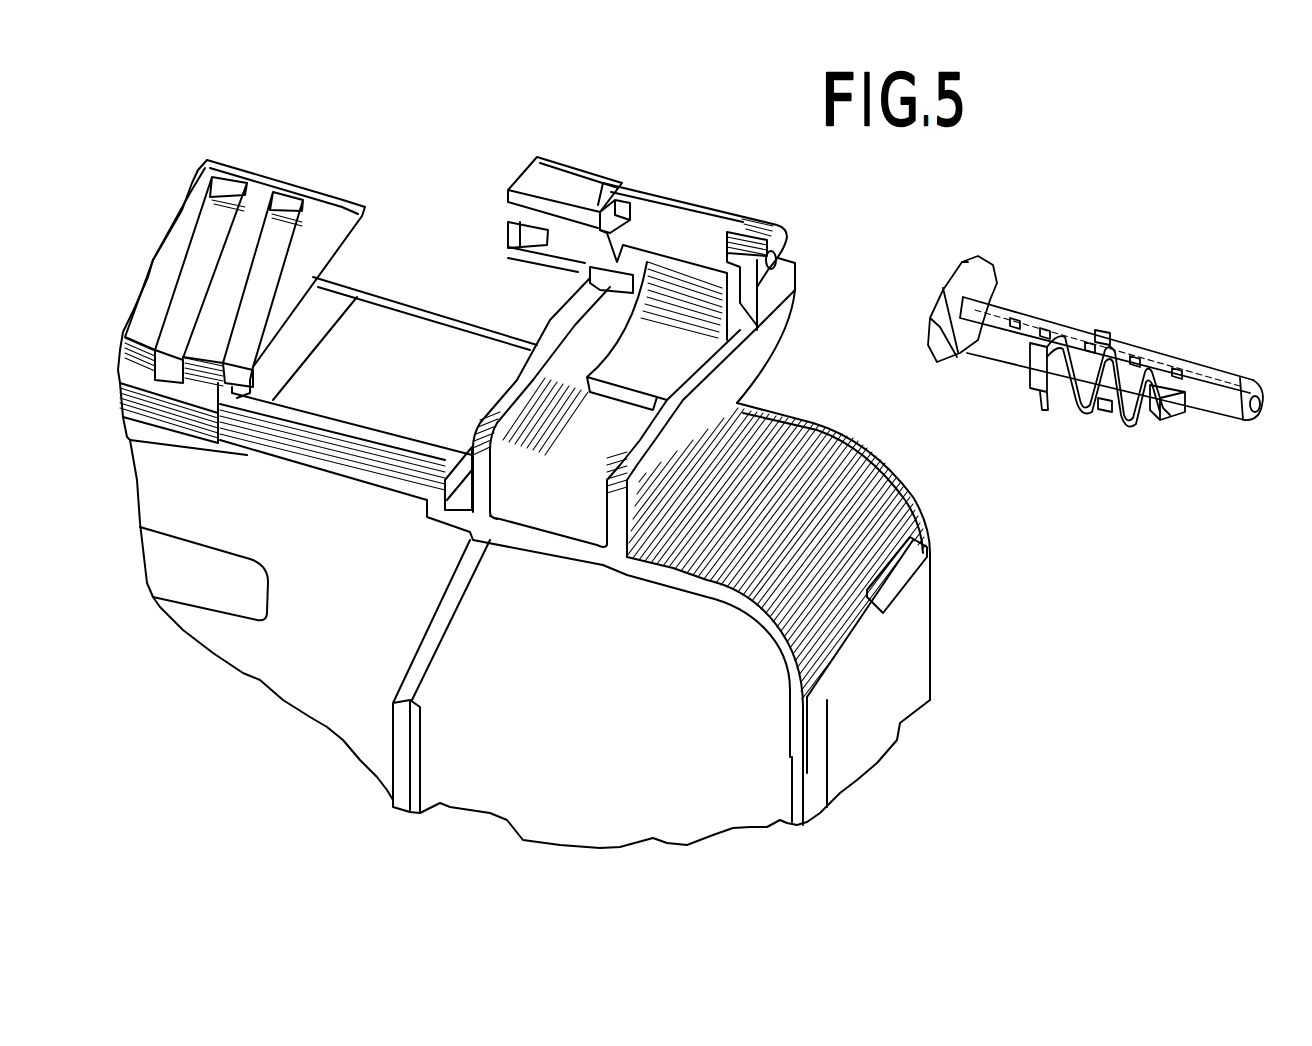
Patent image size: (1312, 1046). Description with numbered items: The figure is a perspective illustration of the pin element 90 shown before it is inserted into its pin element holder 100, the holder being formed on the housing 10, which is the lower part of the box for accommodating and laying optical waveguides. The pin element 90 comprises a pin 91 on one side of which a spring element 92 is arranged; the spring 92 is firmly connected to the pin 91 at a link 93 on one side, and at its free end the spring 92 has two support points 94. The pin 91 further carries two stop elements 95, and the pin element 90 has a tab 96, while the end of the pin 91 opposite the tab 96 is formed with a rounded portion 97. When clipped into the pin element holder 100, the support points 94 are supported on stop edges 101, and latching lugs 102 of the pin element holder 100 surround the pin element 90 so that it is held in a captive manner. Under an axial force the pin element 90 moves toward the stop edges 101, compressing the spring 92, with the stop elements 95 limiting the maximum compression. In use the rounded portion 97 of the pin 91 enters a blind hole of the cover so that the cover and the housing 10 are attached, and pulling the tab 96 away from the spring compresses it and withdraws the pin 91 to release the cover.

The housing 10 is at (907, 683).
The pin element holder 100 is at (759, 206).
The stop edges 101 is at (632, 203).
The latching lugs 102 is at (525, 237).
The pin element 90 is at (1107, 349).
The pin 91 is at (1220, 407).
The spring element 92 is at (1073, 407).
The link 93 is at (1183, 400).
The support points 94 is at (1047, 407).
The stop elements 95 is at (1103, 407).
The tab 96 is at (987, 283).
The rounded portion 97 is at (1257, 405).